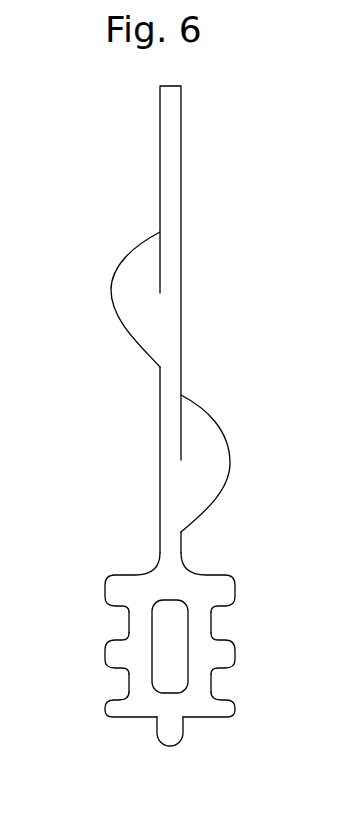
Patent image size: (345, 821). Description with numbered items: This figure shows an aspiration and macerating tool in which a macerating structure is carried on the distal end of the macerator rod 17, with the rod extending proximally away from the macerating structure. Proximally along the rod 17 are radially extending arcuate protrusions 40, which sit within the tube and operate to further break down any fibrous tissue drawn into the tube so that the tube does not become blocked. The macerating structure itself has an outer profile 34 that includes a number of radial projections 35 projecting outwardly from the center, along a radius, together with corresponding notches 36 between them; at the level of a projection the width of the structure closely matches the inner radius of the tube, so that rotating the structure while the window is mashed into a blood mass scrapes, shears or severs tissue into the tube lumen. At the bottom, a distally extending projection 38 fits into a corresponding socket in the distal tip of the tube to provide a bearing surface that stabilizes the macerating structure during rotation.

The macerator rod 17 is at (176, 177).
The arcuate protrusion 40 is at (215, 422).
The outer profile 34 is at (167, 670).
The radial projection 35 is at (224, 582).
The notch 36 is at (240, 619).
The distally extending projection 38 is at (172, 738).